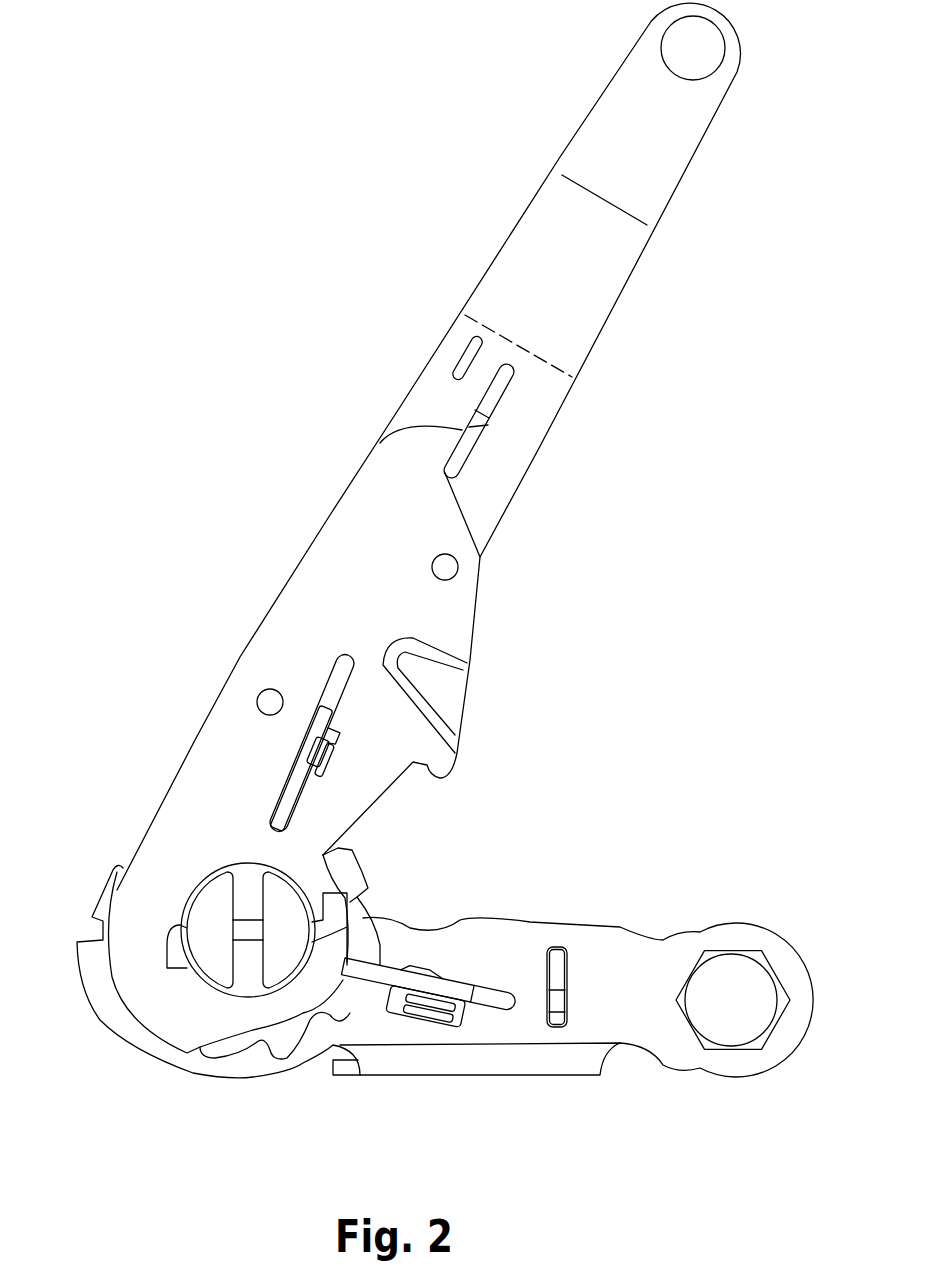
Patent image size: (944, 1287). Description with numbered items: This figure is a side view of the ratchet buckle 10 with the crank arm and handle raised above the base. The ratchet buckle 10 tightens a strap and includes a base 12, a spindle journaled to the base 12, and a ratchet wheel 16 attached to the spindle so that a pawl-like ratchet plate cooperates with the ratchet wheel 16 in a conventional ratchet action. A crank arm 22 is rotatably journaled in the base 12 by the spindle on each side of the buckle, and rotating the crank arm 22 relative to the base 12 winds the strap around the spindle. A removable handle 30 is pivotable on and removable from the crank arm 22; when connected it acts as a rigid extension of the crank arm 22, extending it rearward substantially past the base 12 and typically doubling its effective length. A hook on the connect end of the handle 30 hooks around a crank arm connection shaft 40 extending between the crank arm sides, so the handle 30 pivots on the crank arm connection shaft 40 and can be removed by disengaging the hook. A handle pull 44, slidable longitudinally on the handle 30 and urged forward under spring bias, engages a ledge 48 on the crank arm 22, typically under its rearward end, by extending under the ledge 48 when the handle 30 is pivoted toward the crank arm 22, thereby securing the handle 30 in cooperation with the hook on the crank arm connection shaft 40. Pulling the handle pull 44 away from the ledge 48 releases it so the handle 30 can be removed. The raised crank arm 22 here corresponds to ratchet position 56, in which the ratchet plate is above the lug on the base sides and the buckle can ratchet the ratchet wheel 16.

The ratchet buckle 10 is at (698, 603).
The base 12 is at (617, 937).
The ratchet wheel 16 is at (360, 870).
The crank arm 22 is at (190, 805).
The removable handle 30 is at (620, 128).
The crank arm connection shaft 40 is at (268, 703).
The handle pull 44 is at (473, 433).
The ledge 48 is at (465, 445).
The ratchet position 56 is at (588, 742).